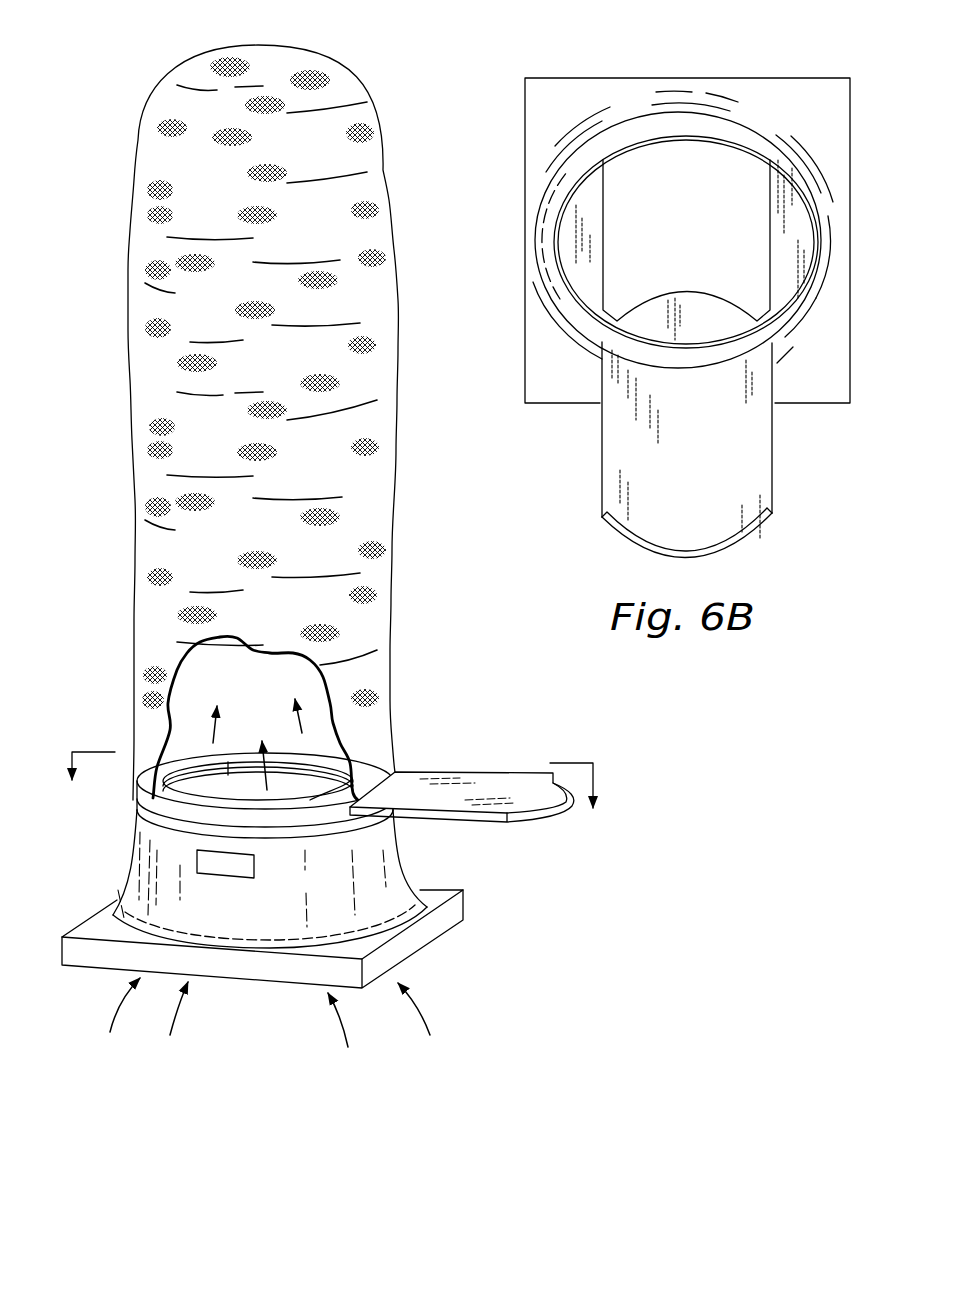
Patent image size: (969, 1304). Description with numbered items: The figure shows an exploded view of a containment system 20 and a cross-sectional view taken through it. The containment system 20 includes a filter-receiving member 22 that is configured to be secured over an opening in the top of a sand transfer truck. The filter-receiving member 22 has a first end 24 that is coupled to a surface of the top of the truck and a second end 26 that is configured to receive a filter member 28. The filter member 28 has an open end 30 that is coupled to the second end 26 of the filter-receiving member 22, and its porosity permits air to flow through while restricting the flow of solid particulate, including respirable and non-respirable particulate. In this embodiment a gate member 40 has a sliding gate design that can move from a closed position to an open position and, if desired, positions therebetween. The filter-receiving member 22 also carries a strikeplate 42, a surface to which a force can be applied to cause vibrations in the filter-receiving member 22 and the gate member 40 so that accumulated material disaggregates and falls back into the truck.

In FIG. 6A, the containment system 20 is at (96, 433).
In FIG. 6A, the filter-receiving member 22 is at (385, 857).
In FIG. 6B, the filter-receiving member 22 is at (828, 286).
In FIG. 6A, the first end 24 is at (434, 924).
In FIG. 6A, the second end 26 is at (139, 775).
In FIG. 6A, the filter member 28 is at (388, 382).
In FIG. 6A, the open end 30 is at (382, 766).
In FIG. 6A, the gate member 40 is at (392, 817).
In FIG. 6B, the gate member 40 is at (777, 363).
In FIG. 6A, the strikeplate 42 is at (198, 857).